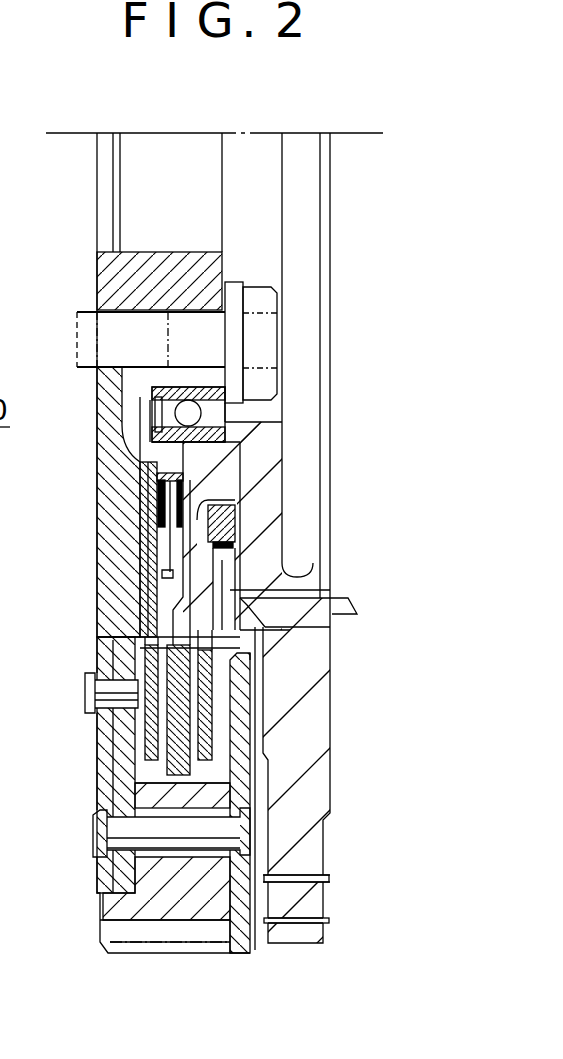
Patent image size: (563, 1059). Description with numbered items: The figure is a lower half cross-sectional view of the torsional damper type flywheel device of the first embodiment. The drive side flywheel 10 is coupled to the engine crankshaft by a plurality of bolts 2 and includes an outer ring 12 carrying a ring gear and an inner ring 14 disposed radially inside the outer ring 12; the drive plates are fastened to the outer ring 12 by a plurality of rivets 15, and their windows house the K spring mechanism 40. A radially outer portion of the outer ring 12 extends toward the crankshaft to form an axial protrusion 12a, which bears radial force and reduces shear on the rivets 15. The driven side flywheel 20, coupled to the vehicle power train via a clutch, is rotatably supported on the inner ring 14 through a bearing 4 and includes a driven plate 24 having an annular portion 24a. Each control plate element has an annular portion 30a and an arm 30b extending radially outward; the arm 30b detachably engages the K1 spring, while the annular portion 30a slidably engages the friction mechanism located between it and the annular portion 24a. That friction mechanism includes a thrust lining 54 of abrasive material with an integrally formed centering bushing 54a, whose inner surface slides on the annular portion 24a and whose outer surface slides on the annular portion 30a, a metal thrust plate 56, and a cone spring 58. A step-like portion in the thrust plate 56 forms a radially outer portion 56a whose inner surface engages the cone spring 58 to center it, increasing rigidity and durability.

The bolt 2 is at (263, 338).
The bearing 4 is at (48, 204).
The drive side flywheel 10 is at (133, 957).
The outer ring 12 is at (153, 902).
The axial protrusion 12a is at (98, 887).
The inner ring 14 is at (100, 272).
The rivet 15 is at (97, 828).
The driven side flywheel 20 is at (297, 947).
The driven plate 24 is at (240, 462).
The annular portion of driven plate 24a is at (240, 502).
The annular portion of control plate element 30a is at (157, 530).
The arm of control plate element 30b is at (300, 590).
The K spring mechanism 40 is at (34, 188).
The thrust lining 54 is at (247, 552).
The centering bushing 54a is at (243, 527).
The thrust plate 56 is at (150, 523).
The radially outer portion of thrust plate 56a is at (165, 575).
The cone spring 58 is at (145, 495).